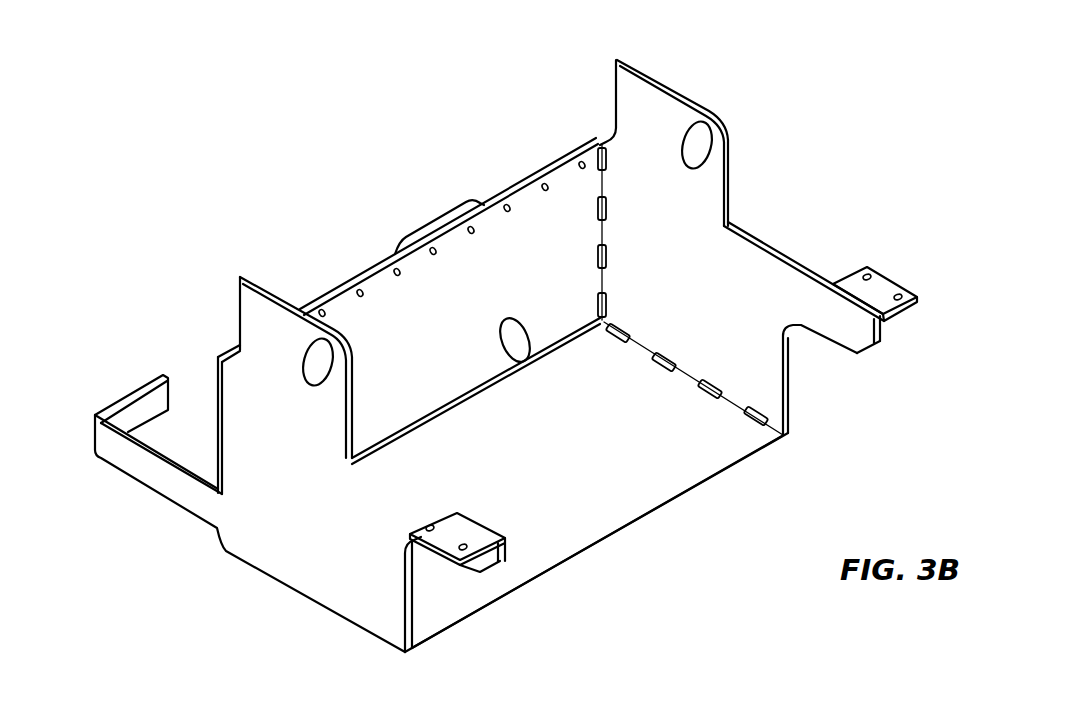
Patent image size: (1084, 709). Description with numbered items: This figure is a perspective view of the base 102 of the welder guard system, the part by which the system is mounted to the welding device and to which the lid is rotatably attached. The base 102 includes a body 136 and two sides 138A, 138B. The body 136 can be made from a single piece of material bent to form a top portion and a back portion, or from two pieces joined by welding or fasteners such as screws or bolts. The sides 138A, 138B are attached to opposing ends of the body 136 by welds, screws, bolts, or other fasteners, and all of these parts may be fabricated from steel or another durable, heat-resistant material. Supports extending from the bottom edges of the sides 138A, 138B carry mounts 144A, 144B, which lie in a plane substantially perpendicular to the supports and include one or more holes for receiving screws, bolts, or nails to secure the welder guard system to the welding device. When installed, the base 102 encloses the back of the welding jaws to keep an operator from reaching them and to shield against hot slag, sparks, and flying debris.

The base 102 is at (511, 356).
The body 136 is at (620, 503).
The side 138A is at (327, 471).
The side 138B is at (717, 268).
The mount 144A is at (460, 527).
The mount 144B is at (880, 287).